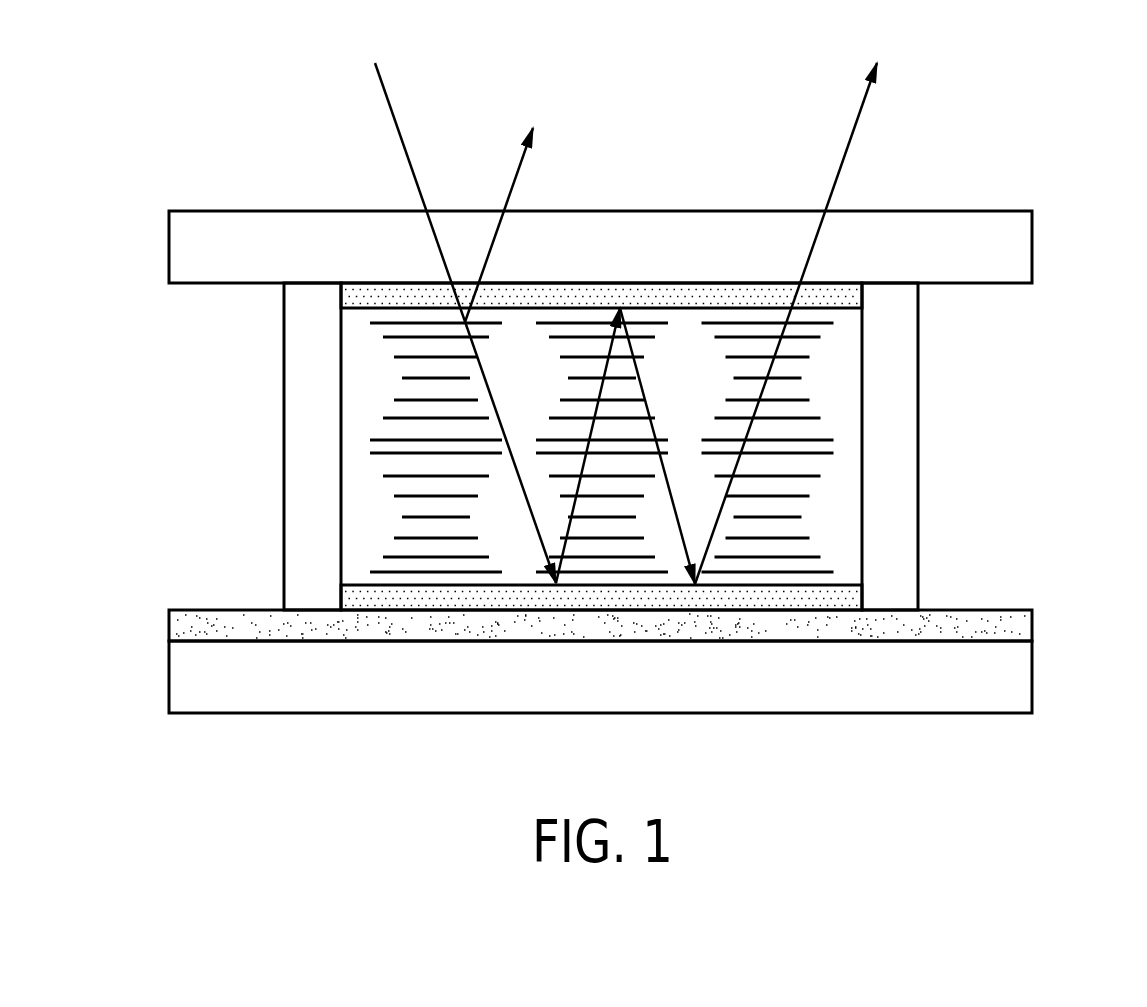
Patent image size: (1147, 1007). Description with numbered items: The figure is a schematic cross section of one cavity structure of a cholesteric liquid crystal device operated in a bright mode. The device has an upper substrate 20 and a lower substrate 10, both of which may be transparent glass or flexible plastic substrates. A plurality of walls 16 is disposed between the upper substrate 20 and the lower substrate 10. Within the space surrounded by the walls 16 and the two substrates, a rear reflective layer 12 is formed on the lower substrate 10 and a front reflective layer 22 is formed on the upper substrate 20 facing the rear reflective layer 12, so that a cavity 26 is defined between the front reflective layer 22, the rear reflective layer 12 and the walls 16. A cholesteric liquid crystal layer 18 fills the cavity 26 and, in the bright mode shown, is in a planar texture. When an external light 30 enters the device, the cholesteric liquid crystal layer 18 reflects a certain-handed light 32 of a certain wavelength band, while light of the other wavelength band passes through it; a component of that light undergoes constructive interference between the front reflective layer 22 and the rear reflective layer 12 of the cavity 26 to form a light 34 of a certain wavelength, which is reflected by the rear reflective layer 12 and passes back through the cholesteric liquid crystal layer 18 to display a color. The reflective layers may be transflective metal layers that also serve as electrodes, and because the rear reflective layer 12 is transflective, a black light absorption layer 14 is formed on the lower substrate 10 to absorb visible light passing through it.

The lower substrate 10 is at (1020, 683).
The rear reflective layer 12 is at (820, 597).
The black light absorption layer 14 is at (1020, 625).
The walls 16 is at (297, 480).
The cholesteric liquid crystal layer 18 is at (728, 446).
The upper substrate 20 is at (1020, 248).
The front reflective layer 22 is at (823, 298).
The cavity 26 is at (830, 373).
The external light 30 is at (395, 122).
The certain-handed light 32 is at (515, 182).
The light of a certain wavelength 34 is at (858, 122).